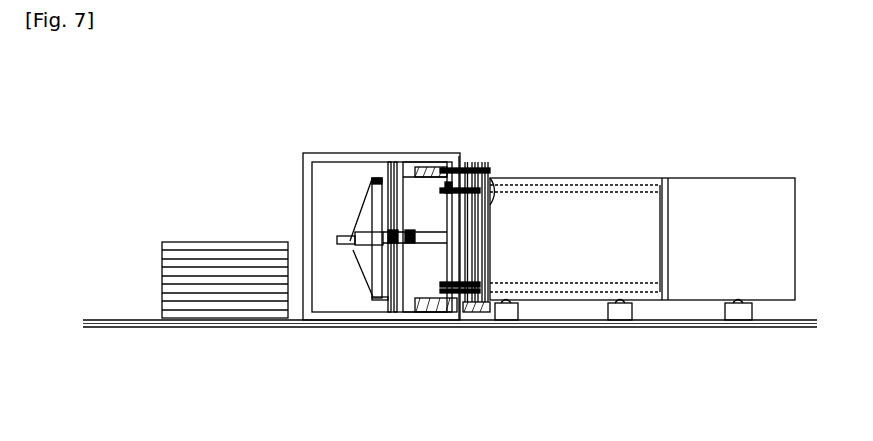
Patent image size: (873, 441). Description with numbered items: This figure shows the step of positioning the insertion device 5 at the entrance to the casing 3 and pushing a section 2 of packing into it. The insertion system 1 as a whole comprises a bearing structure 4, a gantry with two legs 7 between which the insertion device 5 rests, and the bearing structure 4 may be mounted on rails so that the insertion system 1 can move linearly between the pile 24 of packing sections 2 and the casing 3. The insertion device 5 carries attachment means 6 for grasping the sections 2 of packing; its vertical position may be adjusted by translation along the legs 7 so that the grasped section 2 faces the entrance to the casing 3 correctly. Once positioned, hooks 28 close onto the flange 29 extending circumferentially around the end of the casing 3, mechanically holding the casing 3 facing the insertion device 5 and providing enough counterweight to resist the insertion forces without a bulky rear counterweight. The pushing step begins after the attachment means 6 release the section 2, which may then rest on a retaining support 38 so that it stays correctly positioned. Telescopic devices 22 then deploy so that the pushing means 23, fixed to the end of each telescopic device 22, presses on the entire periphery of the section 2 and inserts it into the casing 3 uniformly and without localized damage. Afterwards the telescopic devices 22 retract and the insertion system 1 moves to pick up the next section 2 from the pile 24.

The insertion system 1 is at (395, 237).
The section of packing 2 is at (672, 230).
The casing 3 is at (642, 217).
The bearing structure 4 is at (303, 212).
The insertion device 5 is at (332, 244).
The attachment means 6 is at (478, 168).
The legs 7 is at (372, 162).
The telescopic devices 22 is at (623, 178).
The pushing means 23 is at (657, 226).
The pile of packing sections 24 is at (154, 275).
The hooks 28 is at (487, 180).
The flange 29 is at (495, 212).
The retaining support 38 is at (345, 322).